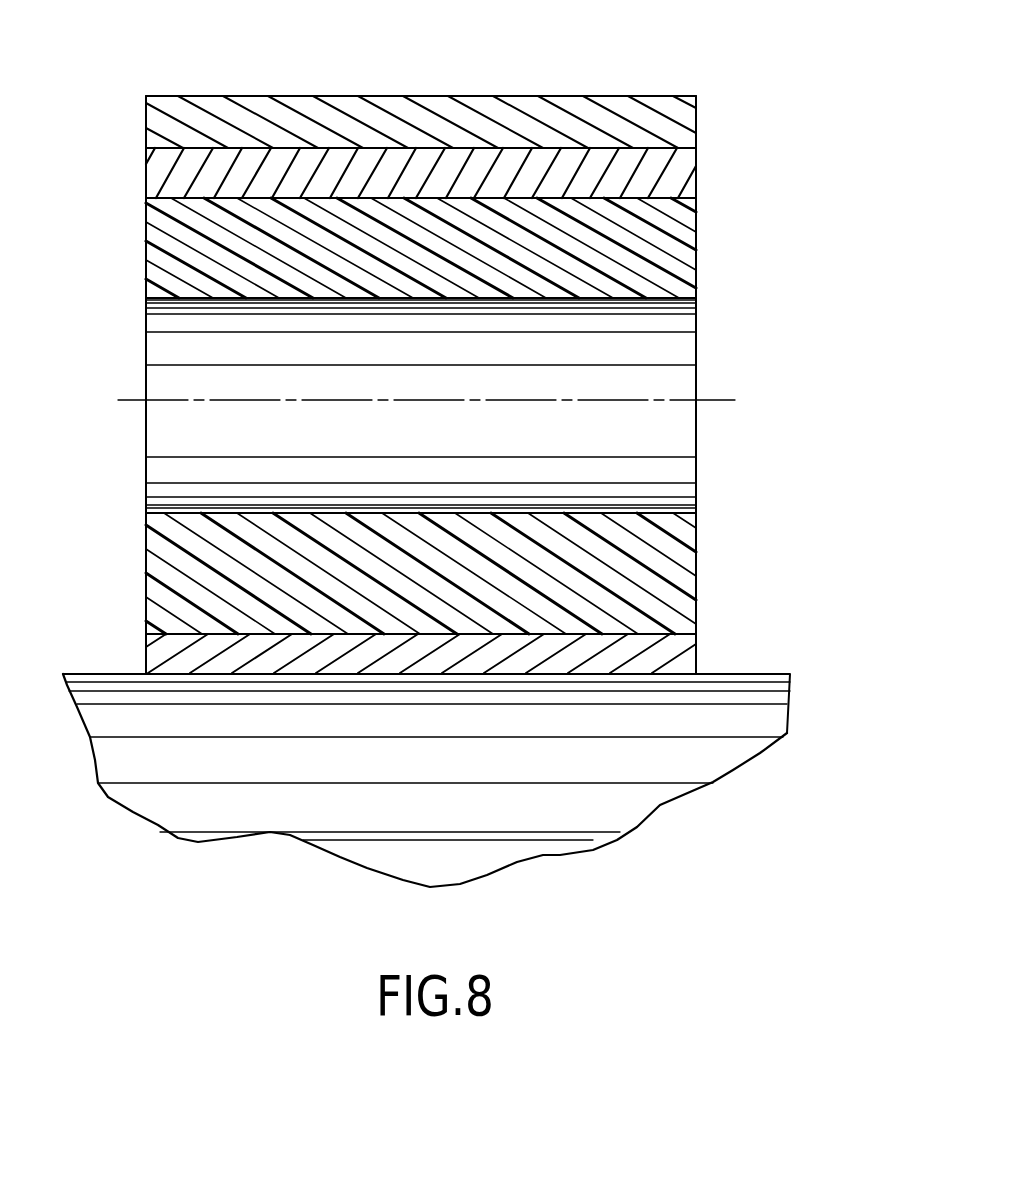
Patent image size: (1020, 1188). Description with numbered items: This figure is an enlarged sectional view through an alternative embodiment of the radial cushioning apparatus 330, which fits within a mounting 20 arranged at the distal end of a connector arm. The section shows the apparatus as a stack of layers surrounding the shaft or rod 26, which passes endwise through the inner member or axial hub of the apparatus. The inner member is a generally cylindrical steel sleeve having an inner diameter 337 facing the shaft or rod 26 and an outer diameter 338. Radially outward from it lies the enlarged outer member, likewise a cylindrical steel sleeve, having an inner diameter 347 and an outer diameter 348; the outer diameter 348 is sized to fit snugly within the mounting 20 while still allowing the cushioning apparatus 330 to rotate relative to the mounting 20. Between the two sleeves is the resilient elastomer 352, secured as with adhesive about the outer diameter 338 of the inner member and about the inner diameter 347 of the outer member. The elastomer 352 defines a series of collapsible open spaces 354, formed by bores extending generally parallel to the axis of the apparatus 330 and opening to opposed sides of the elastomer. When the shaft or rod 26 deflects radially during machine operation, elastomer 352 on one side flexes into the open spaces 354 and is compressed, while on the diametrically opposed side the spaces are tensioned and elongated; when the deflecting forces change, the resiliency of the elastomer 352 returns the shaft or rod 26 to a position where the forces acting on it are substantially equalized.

The radial cushioning apparatus 330 is at (100, 190).
The outer diameter of outer member 348 is at (585, 146).
The mounting 20 is at (683, 113).
The inner diameter of outer member 347 is at (686, 205).
The resilient elastomer 352 is at (115, 258).
The collapsible open space 354 is at (657, 297).
The outer diameter of inner member 338 is at (181, 634).
The inner diameter of inner member 337 is at (688, 662).
The shaft or rod 26 is at (745, 683).